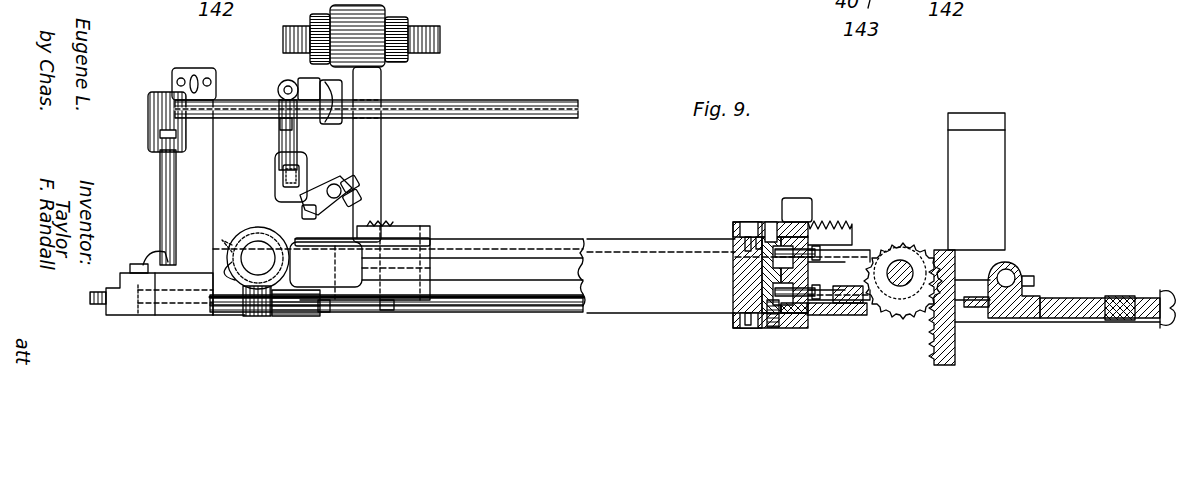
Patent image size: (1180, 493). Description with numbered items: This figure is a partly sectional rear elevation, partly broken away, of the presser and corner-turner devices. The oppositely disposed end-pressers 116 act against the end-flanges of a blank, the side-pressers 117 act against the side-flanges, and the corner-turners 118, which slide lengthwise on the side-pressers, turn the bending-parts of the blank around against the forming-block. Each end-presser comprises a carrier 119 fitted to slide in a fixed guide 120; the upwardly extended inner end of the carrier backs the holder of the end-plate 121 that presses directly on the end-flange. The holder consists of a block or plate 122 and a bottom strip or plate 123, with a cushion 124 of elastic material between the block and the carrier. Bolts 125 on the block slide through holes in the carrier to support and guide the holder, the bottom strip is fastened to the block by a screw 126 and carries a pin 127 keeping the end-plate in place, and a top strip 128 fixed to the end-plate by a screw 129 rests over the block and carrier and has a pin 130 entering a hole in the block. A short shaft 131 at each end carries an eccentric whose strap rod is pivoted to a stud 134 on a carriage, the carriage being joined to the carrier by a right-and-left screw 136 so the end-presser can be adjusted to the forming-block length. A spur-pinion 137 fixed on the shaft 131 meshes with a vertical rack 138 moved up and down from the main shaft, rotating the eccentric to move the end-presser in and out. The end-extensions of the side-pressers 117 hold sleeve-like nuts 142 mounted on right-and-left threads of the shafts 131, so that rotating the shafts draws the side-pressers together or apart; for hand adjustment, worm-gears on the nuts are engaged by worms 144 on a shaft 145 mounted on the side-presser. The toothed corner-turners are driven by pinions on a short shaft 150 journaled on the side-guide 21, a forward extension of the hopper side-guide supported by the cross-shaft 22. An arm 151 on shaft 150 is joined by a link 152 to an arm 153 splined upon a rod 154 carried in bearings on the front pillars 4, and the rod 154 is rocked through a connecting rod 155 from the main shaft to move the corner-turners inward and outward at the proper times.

The pillars 4 is at (194, 191).
The side-guide forward extension 21 is at (385, 85).
The cross-shaft 22 is at (432, 25).
The end-presser 116 is at (352, 318).
The side-presser 117 is at (612, 239).
The corner-turner 118 is at (430, 222).
The carrier 119 is at (108, 315).
The fixed guide 120 is at (238, 316).
The end-plate 121 is at (735, 283).
The block or plate 122 is at (772, 270).
The bottom strip or plate 123 is at (738, 322).
The cushion 124 is at (786, 320).
The bolts 125 is at (800, 255).
The screw 126 is at (773, 329).
The pin or projection 127 is at (751, 328).
The top strip 128 is at (768, 226).
The screw 129 is at (748, 222).
The projection or pin 130 is at (775, 230).
The short shaft 131 is at (258, 258).
The stud 134 is at (1015, 268).
The right-and-left screw 136 is at (1082, 300).
The spur-pinion 137 is at (258, 230).
The vertical rack 138 is at (960, 350).
The sleeve-like nuts 142 is at (238, 250).
The worms 144 is at (260, 319).
The shaft 145 is at (518, 312).
The short shaft 150 is at (340, 195).
The arm 151 is at (306, 184).
The link 152 is at (283, 140).
The arm 153 is at (305, 78).
The rod 154 is at (480, 100).
The connecting rod 155 is at (155, 208).